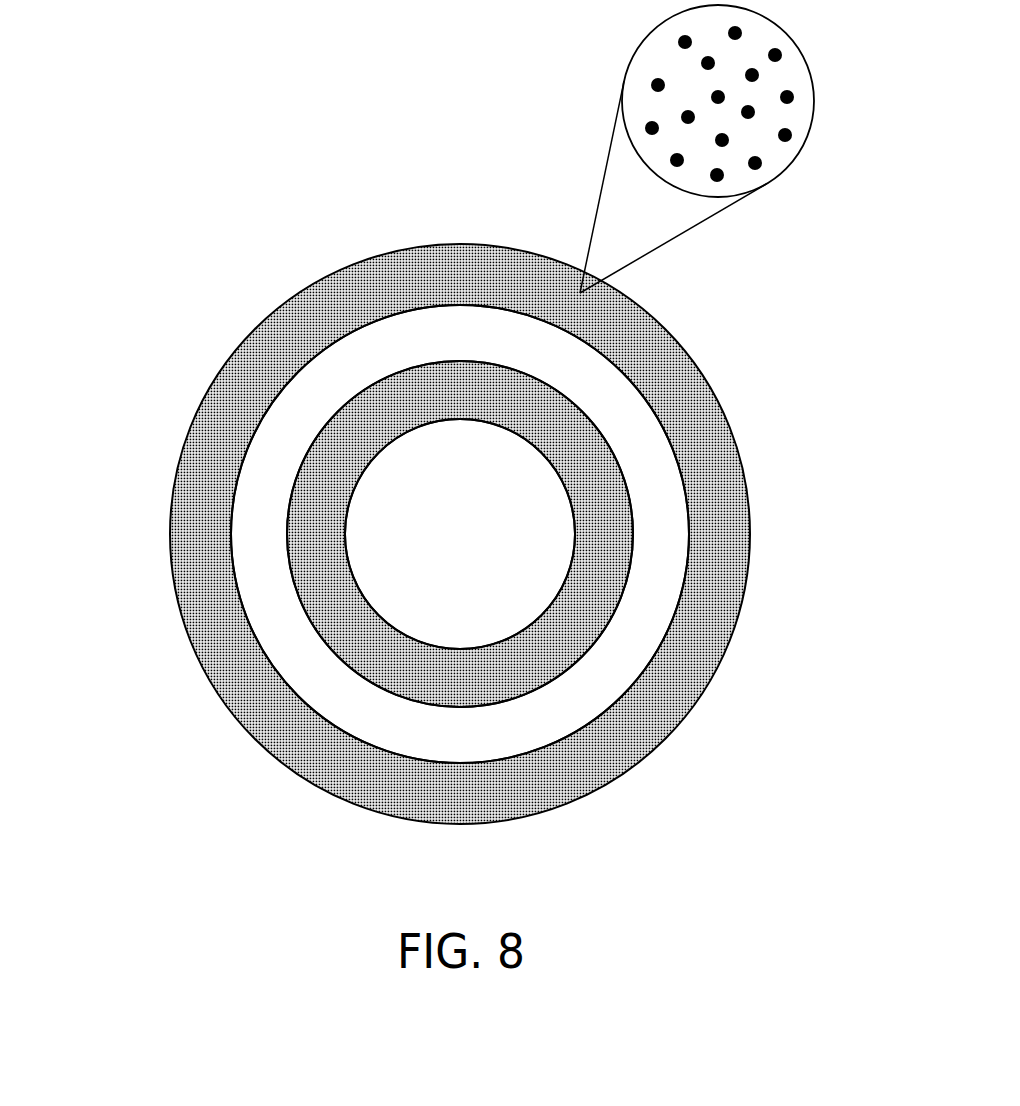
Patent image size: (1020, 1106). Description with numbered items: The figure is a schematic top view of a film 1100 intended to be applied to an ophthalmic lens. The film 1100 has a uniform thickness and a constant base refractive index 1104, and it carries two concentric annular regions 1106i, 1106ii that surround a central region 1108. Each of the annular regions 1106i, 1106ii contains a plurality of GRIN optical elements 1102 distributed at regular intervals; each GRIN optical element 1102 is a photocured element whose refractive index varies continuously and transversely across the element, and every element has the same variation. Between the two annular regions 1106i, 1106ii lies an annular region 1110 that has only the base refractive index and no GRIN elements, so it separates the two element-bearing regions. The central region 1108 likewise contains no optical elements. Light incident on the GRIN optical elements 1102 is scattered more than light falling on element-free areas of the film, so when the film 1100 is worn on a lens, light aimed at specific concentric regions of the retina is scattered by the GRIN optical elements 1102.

The film 1100 is at (310, 263).
The GRIN optical elements 1102 is at (648, 85).
The base refractive index of the film 1104 is at (655, 62).
The first annular region 1106i is at (207, 442).
The second annular region 1106ii is at (435, 378).
The central region 1108 is at (405, 503).
The annular region with no GRIN elements 1110 is at (263, 548).